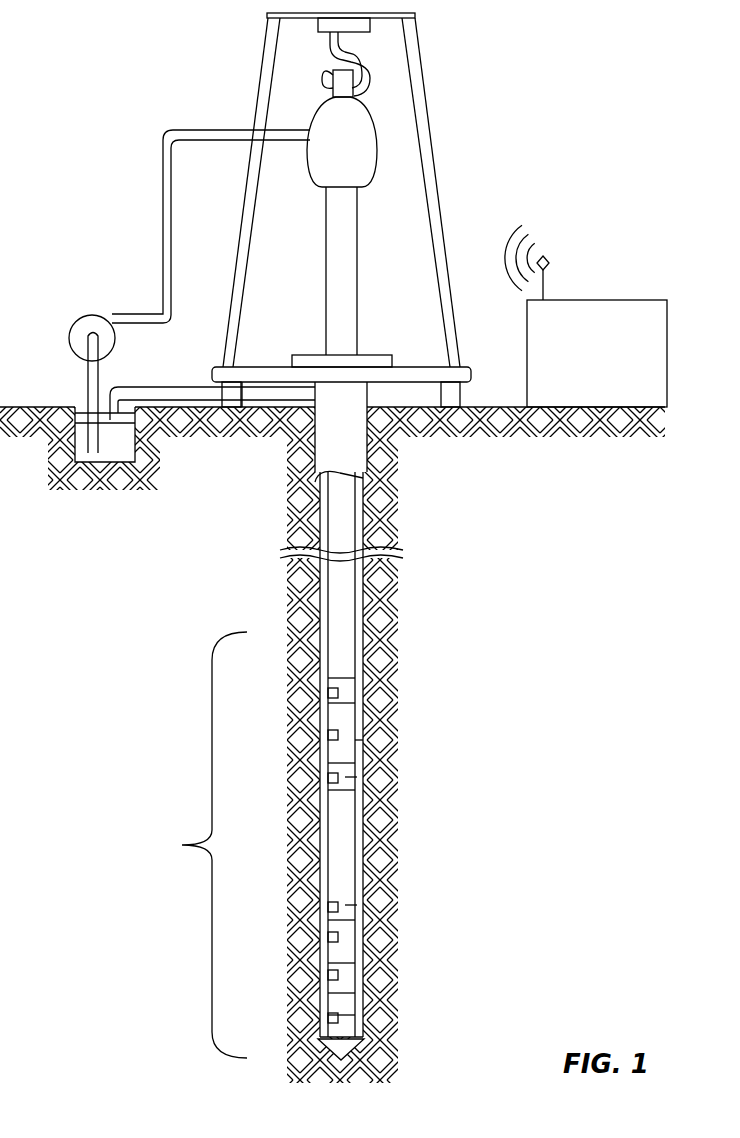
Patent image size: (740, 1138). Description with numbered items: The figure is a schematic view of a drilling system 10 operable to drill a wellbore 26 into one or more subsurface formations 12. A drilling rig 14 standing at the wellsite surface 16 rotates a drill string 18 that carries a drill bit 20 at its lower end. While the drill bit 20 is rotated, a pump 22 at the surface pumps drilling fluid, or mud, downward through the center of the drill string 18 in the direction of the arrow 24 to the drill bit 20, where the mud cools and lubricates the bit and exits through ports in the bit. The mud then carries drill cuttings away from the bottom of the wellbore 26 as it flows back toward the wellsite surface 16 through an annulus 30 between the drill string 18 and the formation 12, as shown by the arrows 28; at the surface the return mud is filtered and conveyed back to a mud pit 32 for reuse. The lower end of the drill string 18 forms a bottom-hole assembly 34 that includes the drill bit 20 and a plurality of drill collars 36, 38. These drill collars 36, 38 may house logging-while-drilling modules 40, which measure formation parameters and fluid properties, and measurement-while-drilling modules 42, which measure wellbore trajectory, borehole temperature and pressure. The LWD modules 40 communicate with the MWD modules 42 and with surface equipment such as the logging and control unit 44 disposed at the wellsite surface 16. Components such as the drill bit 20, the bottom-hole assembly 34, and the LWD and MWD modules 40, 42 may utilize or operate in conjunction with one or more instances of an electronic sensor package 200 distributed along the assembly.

The drilling system 10 is at (568, 147).
The subsurface formation 12 is at (575, 819).
The drilling rig 14 is at (230, 110).
The wellsite surface 16 is at (488, 407).
The drill string 18 is at (366, 660).
The drill bit 20 is at (360, 1028).
The pump 22 is at (72, 340).
The arrow 24 is at (342, 612).
The wellbore 26 is at (383, 615).
The arrows 28 is at (366, 500).
The annulus 30 is at (368, 679).
The mud pit 32 is at (118, 455).
The bottom-hole assembly 34 is at (199, 845).
The drill collar 36 is at (356, 740).
The drill collar 38 is at (372, 930).
The logging-while-drilling module 40 is at (356, 777).
The measurement-while-drilling module 42 is at (370, 712).
The logging and control unit 44 is at (597, 300).
The electronic sensor package 200 is at (328, 693).